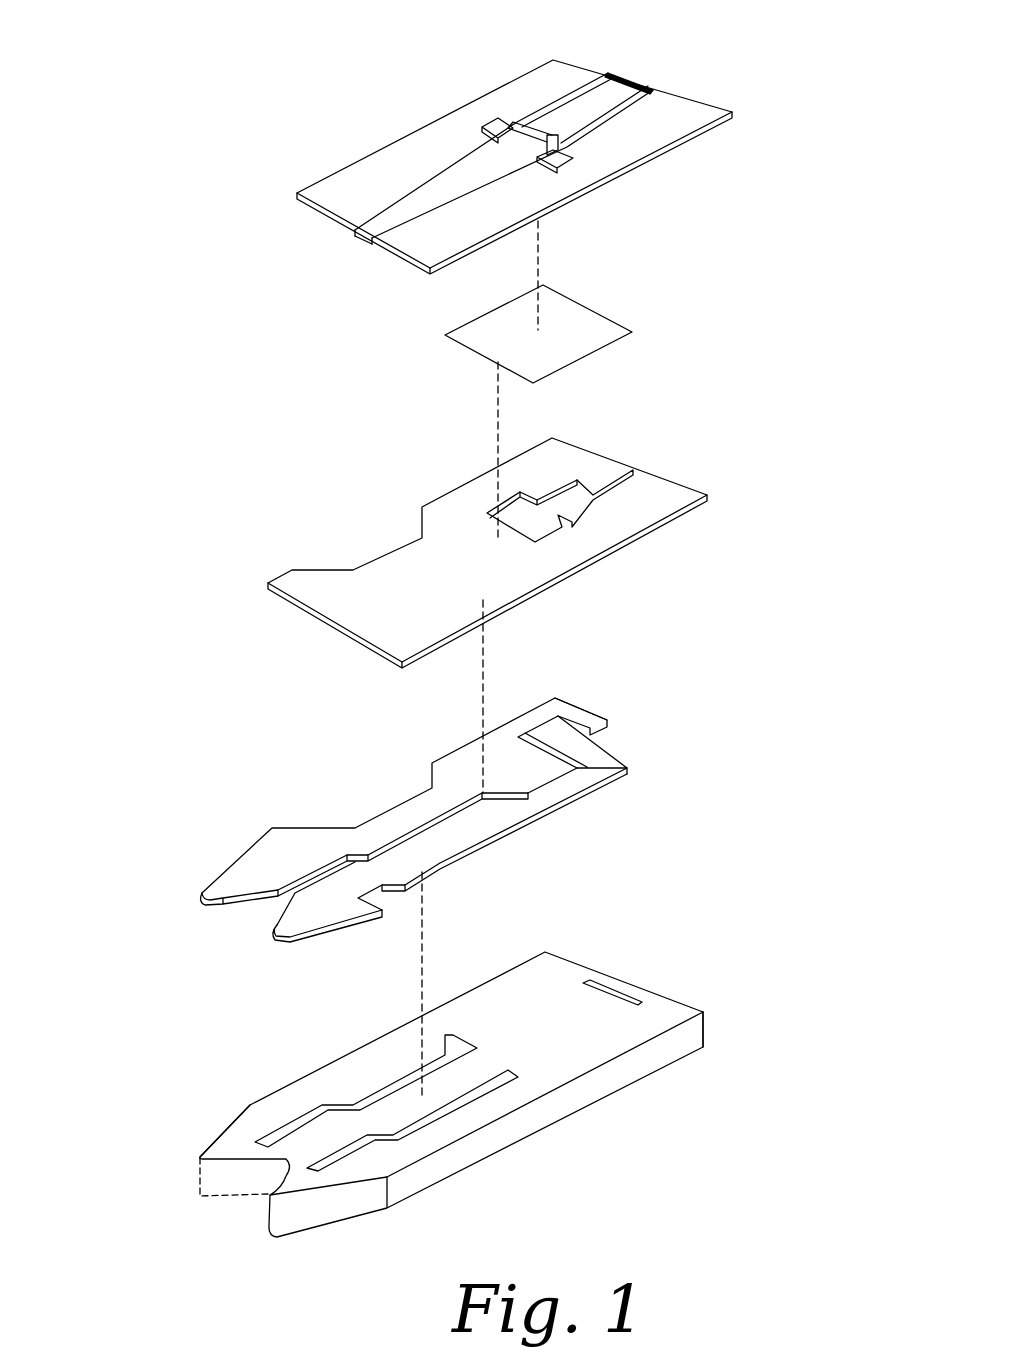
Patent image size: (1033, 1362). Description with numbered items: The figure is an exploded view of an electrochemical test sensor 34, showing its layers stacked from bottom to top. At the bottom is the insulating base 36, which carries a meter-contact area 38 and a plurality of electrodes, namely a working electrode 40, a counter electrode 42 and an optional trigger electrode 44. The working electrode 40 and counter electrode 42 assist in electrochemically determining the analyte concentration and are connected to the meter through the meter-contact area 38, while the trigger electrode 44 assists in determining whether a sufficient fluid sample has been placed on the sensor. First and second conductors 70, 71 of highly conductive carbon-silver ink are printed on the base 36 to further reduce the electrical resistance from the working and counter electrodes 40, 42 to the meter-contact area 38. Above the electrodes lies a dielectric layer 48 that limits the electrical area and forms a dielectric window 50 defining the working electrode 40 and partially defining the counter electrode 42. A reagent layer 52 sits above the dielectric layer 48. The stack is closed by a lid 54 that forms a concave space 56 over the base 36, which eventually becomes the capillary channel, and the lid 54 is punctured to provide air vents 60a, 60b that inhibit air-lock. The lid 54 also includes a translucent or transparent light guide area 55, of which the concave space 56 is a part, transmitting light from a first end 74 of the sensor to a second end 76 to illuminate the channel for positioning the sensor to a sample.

The electrochemical test sensor 34 is at (128, 92).
The insulating base 36 is at (458, 1091).
The meter-contact area 38 is at (414, 841).
The working electrode 40 is at (577, 747).
The counter electrode 42 is at (533, 770).
The trigger electrode 44 is at (617, 990).
The dielectric layer 48 is at (700, 465).
The dielectric window 50 is at (585, 488).
The reagent layer 52 is at (620, 295).
The lid 54 is at (353, 128).
The light guide area 55 is at (373, 213).
The concave space 56 is at (644, 65).
The air vent 60a is at (566, 163).
The air vent 60b is at (497, 120).
The first conductor 70 is at (418, 1123).
The second conductor 71 is at (308, 1120).
The first end 74 is at (215, 1143).
The second end 76 is at (692, 1002).